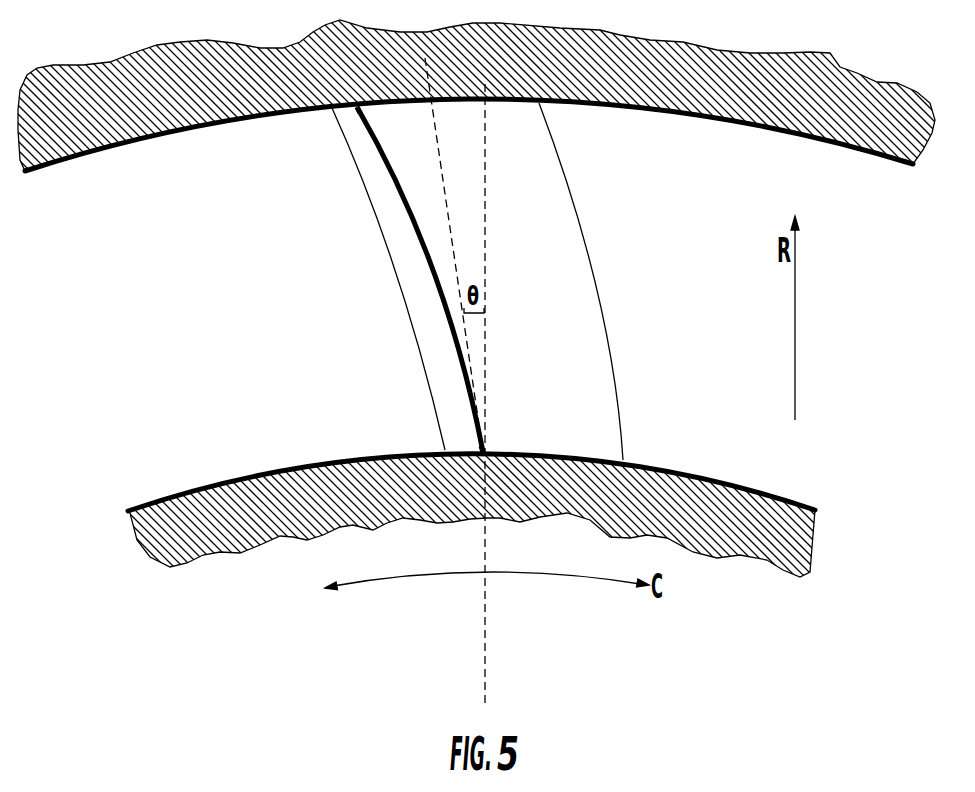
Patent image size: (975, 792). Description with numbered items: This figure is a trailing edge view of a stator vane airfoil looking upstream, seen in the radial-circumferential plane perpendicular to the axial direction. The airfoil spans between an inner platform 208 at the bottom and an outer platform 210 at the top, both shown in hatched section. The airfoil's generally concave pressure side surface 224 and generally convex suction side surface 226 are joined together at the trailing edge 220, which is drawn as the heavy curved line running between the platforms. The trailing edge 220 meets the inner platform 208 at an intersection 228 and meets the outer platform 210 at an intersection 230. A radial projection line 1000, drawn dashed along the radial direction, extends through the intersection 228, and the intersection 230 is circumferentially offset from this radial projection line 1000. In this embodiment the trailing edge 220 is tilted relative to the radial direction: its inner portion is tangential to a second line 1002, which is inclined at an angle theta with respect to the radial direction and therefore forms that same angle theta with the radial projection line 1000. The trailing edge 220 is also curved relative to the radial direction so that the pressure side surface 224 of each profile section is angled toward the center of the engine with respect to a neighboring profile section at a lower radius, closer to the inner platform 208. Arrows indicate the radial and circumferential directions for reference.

The inner platform 208 is at (790, 491).
The outer platform 210 is at (884, 149).
The trailing edge 220 is at (451, 333).
The pressure side surface 224 is at (400, 242).
The suction side surface 226 is at (563, 278).
The intersection of the trailing edge with the inner platform 228 is at (481, 447).
The intersection of the trailing edge with the outer platform 230 is at (354, 110).
The radial projection line 1000 is at (485, 135).
The second line 1002 is at (460, 283).